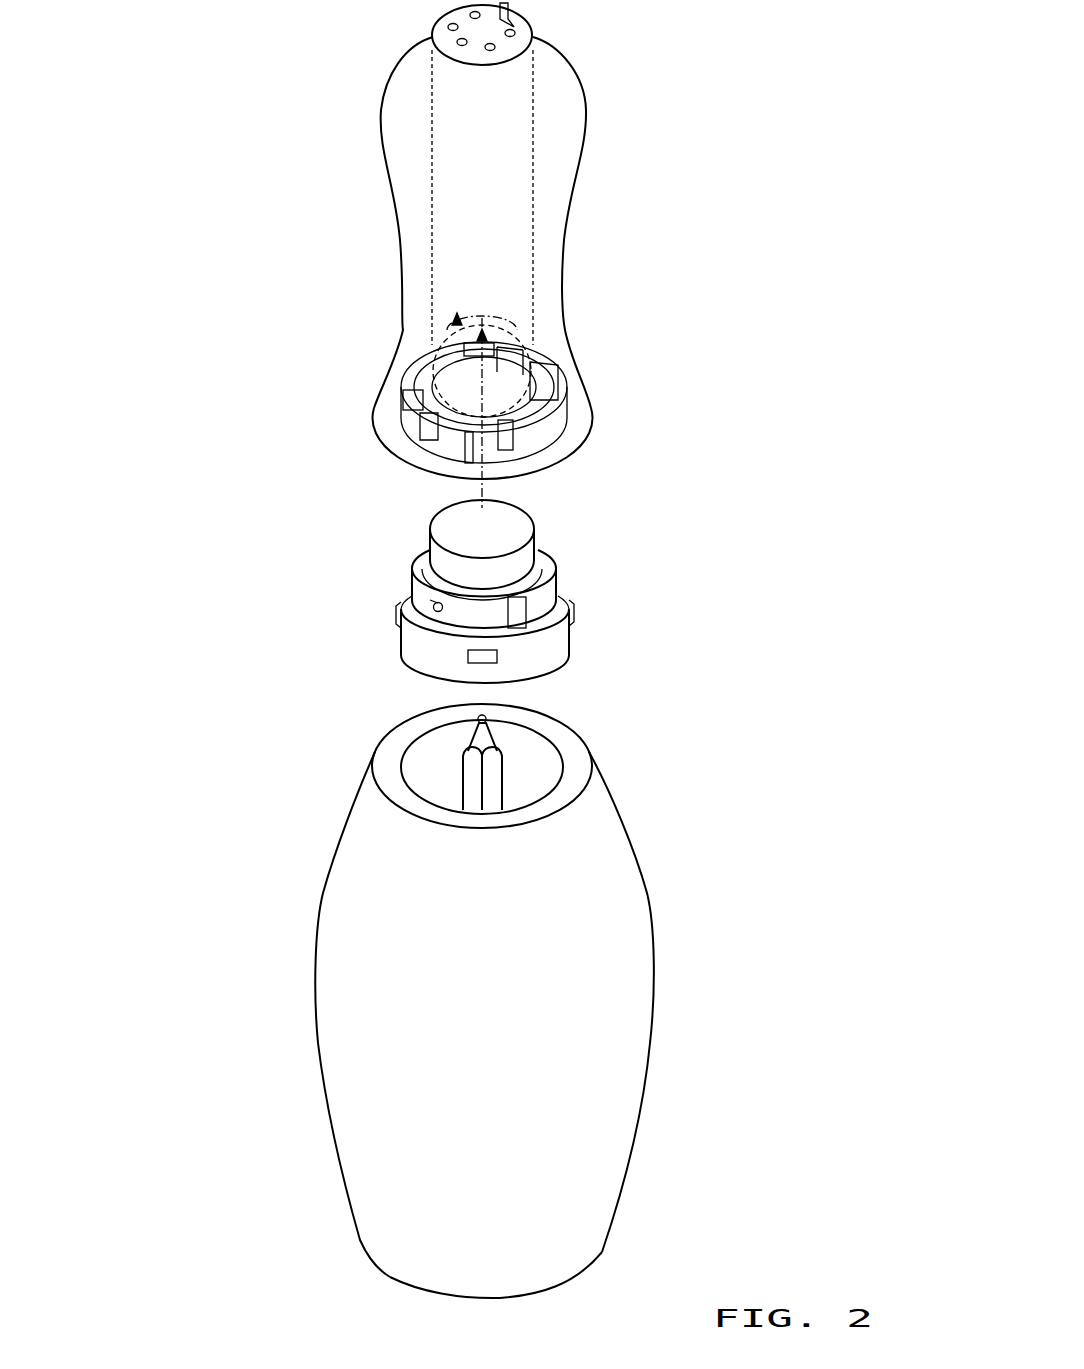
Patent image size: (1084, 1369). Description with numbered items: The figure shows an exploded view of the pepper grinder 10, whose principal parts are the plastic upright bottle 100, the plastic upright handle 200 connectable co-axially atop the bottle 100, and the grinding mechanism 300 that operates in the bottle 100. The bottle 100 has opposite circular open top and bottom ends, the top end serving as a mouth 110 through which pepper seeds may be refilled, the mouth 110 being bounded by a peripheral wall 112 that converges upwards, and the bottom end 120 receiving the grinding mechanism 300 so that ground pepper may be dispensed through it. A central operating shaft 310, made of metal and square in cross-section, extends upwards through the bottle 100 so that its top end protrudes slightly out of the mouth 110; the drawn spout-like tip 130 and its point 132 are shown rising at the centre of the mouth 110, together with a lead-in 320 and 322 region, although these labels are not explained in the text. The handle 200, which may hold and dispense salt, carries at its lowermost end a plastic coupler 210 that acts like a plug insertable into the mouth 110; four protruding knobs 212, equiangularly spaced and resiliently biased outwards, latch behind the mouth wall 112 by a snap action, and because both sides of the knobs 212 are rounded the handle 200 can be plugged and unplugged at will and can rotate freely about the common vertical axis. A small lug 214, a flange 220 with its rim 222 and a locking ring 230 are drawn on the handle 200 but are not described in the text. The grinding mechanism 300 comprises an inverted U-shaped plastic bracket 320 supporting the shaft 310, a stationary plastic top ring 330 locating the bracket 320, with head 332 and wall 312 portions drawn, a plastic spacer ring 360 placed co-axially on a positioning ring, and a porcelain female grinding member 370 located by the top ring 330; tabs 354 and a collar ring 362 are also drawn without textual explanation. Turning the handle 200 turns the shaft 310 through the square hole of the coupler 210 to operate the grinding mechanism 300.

The pepper grinder 10 is at (214, 296).
The bottle 100 is at (722, 920).
The top end (mouth) 110 is at (413, 752).
The peripheral wall 112 is at (414, 797).
The bottom end 120 is at (390, 1283).
The spout 130 is at (497, 768).
The spout tip 132 is at (487, 735).
The handle 200 is at (664, 230).
The coupler 210 is at (540, 45).
The protruding knobs 212 is at (440, 40).
The cap lug 214 is at (515, 11).
The cap flange 220 is at (585, 441).
The cap flange rim 222 is at (587, 415).
The locking ring 230 is at (565, 378).
The grinding mechanism 300 is at (368, 578).
The central operating shaft 310 is at (437, 635).
The plunger lower body wall 312 is at (425, 633).
The bracket 320 is at (555, 662).
The plunger flange edge 322 is at (542, 660).
The top ring 330 is at (429, 535).
The plunger head top 332 is at (458, 520).
The locking tabs 354 is at (403, 610).
The spacer ring 360 is at (540, 552).
The collar ring 362 is at (418, 548).
The female grinding member 370 is at (432, 600).